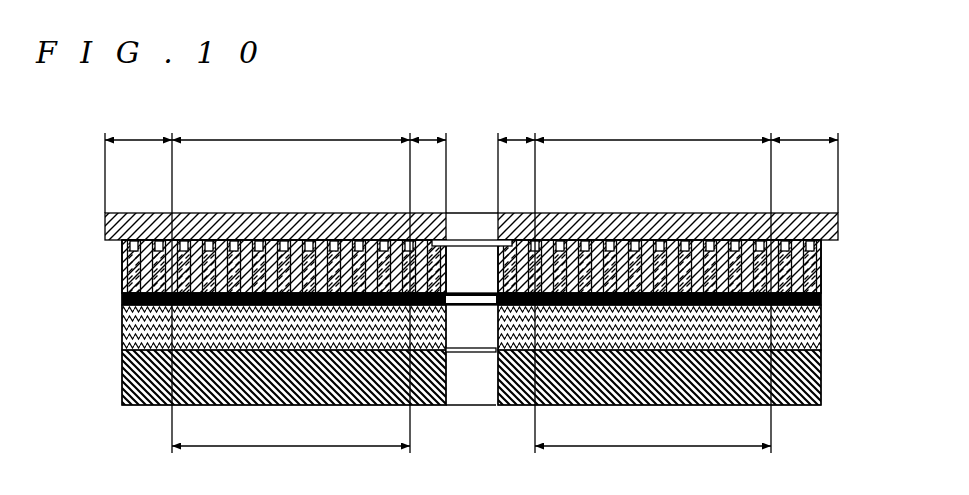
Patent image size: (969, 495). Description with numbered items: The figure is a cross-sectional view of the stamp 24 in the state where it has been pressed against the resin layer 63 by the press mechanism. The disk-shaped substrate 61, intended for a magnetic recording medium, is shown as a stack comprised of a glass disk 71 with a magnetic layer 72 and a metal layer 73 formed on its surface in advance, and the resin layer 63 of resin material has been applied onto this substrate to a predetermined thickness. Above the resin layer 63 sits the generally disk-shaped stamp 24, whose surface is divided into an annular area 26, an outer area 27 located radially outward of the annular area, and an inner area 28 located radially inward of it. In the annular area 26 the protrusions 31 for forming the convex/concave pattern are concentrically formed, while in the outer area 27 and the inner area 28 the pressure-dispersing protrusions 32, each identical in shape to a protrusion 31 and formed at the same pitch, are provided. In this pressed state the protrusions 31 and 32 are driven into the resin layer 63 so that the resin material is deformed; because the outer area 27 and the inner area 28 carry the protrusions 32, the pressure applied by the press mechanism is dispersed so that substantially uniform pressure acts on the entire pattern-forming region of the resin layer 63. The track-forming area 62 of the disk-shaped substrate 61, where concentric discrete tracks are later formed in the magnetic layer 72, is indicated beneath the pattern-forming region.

The stamp 24 is at (830, 218).
The annular area 26 is at (471, 125).
The outer area 27 is at (471, 125).
The inner area 28 is at (472, 125).
The protrusions 31 is at (366, 232).
The protrusions 32 is at (150, 233).
The disk-shaped substrate 61 is at (832, 352).
The track-forming area 62 is at (471, 433).
The resin layer 63 is at (813, 262).
The glass disk 71 is at (813, 383).
The magnetic layer 72 is at (813, 319).
The metal layer 73 is at (813, 290).